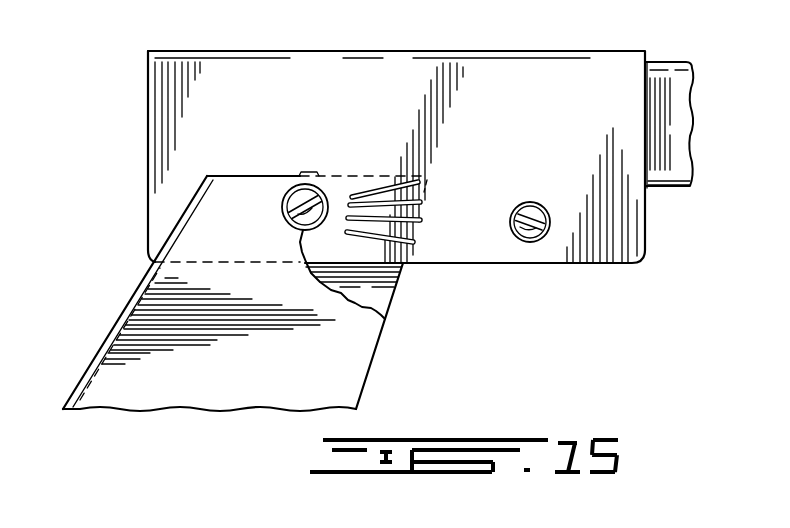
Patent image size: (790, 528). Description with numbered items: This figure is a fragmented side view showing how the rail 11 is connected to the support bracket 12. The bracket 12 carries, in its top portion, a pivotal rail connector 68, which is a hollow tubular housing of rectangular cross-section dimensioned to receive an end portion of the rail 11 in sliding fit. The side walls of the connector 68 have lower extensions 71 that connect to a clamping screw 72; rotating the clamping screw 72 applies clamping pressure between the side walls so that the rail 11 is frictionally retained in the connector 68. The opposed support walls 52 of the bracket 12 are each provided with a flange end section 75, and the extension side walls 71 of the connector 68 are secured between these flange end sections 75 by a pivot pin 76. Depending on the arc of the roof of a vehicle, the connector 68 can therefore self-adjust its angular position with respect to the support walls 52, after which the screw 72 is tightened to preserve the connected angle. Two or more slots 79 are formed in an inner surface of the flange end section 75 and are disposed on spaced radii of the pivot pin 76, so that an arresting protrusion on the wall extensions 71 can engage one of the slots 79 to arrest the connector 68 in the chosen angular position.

The pivotal rail connector 68 is at (533, 86).
The rail 11 is at (673, 163).
The lower extensions of the side walls 71 is at (480, 237).
The pivot pin 76 is at (299, 185).
The clamping screw 72 is at (527, 243).
The slots 79 is at (410, 243).
The support wall 52 is at (183, 385).
The flange end section 75 is at (226, 205).
The bracket 12 is at (152, 315).